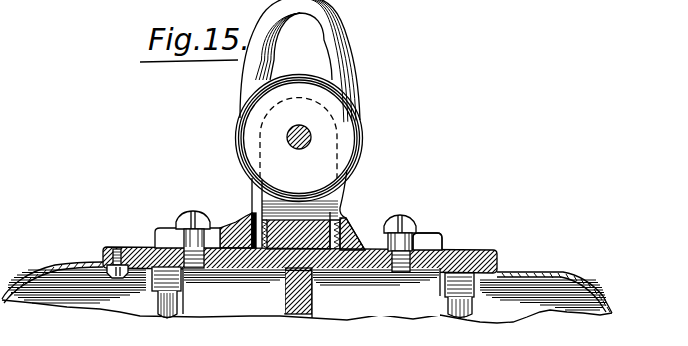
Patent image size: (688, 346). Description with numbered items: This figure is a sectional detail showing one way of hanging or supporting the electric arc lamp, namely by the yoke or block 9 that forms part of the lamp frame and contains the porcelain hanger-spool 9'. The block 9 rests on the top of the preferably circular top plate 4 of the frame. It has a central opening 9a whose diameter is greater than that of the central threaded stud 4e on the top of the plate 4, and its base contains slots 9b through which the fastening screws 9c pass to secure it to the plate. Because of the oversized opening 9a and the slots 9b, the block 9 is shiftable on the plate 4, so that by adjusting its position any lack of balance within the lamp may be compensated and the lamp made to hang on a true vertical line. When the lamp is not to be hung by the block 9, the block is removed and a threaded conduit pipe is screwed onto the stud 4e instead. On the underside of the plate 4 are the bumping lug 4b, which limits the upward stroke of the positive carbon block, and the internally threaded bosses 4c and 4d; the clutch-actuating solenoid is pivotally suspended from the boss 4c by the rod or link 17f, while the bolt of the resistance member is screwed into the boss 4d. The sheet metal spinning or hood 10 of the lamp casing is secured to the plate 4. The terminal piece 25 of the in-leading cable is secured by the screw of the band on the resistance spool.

The yoke or block 9 is at (305, 125).
The porcelain hanger-spool 9' is at (314, 138).
The central opening 9a is at (253, 214).
The slots 9b is at (432, 241).
The fastening screws 9c is at (193, 211).
The top plate 4 is at (478, 246).
The bumping lug 4b is at (165, 240).
The internally threaded boss 4c is at (185, 285).
The internally threaded boss 4d is at (474, 290).
The threaded lug or central stud 4e is at (301, 267).
The sheet metal spinning or hood 10 is at (591, 282).
The rod or link 17f is at (158, 312).
The terminal piece 25 is at (448, 306).